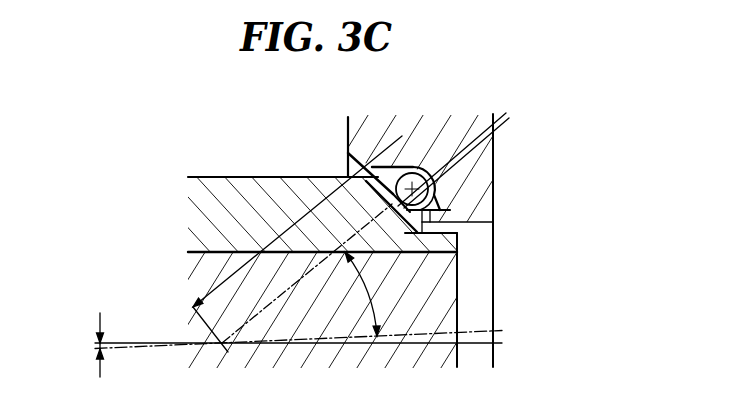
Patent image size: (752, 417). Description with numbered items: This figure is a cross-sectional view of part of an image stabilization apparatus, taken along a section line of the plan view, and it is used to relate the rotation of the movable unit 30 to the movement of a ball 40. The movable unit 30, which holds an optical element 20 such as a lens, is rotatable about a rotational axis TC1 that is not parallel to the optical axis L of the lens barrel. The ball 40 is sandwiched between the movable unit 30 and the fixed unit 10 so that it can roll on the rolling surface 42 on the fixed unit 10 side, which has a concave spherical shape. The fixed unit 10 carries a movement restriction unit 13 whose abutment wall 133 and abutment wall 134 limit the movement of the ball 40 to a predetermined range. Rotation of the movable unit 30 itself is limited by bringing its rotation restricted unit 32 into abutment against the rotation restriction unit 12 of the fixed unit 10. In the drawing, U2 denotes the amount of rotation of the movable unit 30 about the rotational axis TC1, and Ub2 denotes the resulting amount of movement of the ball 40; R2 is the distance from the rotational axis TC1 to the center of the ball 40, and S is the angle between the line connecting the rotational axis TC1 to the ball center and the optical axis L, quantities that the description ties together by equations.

The fixed unit 10 is at (445, 128).
The rotation restriction unit 12 is at (472, 233).
The movement restriction unit 13 is at (373, 157).
The optical element 20 is at (190, 266).
The movable unit 30 is at (206, 188).
The rotation restricted unit 32 is at (448, 229).
The ball 40 is at (432, 188).
The rolling surface 42 is at (425, 205).
The abutment wall 133 is at (430, 222).
The abutment wall 134 is at (414, 165).
The amount of movement of the ball Ub2 is at (518, 140).
The distance from the rotational axis to the center of the ball R2 is at (297, 244).
The angle S is at (369, 294).
The optical axis L is at (425, 348).
The rotational axis TC1 is at (222, 347).
The amount of rotation of the movable unit U2 is at (82, 345).